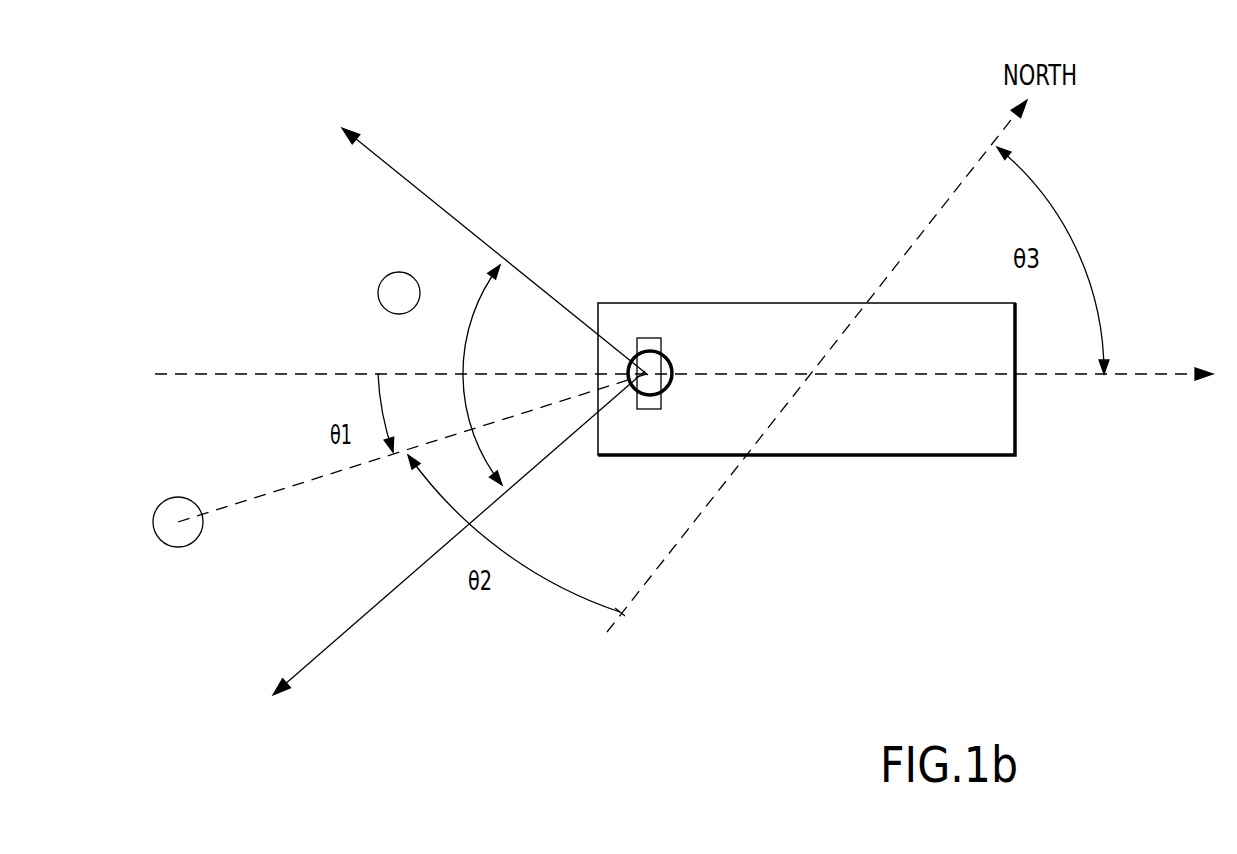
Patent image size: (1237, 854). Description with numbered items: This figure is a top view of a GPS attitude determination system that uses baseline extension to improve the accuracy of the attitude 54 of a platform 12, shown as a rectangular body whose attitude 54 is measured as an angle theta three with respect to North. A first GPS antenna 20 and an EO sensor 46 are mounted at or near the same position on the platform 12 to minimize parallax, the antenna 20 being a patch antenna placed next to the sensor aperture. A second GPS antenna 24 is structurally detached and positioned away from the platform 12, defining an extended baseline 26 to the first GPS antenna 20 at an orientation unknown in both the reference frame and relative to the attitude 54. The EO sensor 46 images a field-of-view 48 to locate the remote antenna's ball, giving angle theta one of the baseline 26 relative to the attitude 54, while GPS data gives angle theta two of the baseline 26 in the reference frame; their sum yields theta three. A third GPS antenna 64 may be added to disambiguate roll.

The platform 12 is at (943, 456).
The first GPS antenna 20 is at (670, 370).
The second GPS antenna 24 is at (162, 500).
The extended baseline 26 is at (268, 498).
The EO sensor 46 is at (653, 338).
The field-of-view 48 is at (464, 343).
The attitude 54 is at (1150, 372).
The third GPS antenna 64 is at (380, 290).